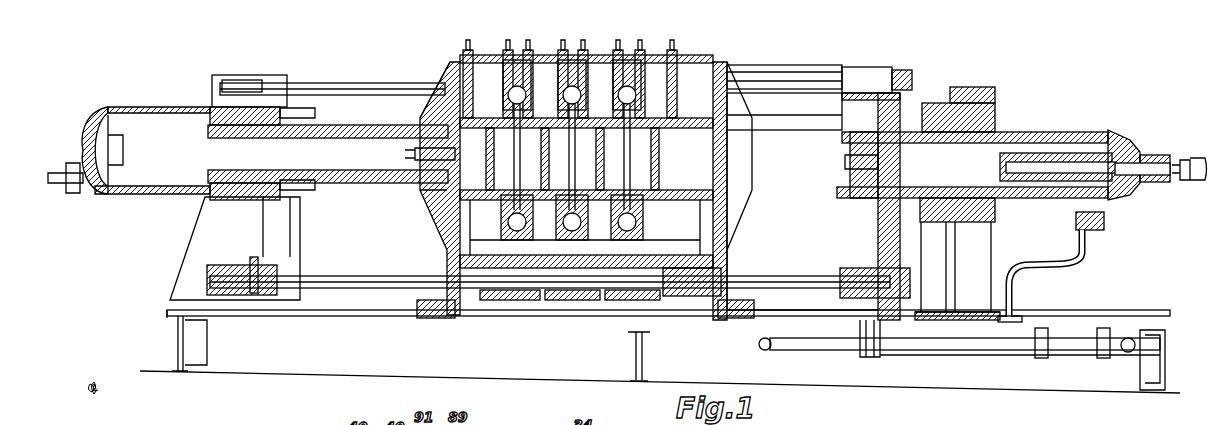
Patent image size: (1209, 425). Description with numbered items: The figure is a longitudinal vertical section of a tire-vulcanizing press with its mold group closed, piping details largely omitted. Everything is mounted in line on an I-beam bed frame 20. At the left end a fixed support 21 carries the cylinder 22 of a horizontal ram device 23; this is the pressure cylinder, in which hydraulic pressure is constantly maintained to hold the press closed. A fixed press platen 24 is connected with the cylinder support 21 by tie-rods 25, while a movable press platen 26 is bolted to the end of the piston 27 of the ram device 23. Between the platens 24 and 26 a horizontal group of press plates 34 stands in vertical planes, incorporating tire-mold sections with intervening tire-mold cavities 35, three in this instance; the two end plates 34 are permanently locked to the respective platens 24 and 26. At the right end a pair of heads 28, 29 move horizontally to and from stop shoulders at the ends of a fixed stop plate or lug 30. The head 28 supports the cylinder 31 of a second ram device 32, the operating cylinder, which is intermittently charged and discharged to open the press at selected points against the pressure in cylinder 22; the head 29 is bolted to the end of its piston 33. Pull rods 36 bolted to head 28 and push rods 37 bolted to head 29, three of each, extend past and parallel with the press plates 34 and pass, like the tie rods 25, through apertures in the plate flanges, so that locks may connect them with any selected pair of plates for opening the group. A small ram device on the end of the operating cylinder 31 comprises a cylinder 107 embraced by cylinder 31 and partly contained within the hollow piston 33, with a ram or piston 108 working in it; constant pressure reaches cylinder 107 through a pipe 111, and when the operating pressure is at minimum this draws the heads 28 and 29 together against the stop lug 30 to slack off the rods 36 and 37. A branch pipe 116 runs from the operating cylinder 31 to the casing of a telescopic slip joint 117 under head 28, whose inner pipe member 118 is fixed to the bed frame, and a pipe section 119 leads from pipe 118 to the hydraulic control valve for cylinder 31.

The I-beam bed frame 20 is at (378, 317).
The fixed support 21 is at (200, 231).
The cylinder 22 is at (122, 106).
The horizontal ram device 23 is at (243, 137).
The fixed press platen 24 is at (712, 240).
The tie-rods 25 is at (330, 92).
The movable press platen 26 is at (428, 220).
The piston 27 is at (345, 125).
The head 28 is at (980, 247).
The head 29 is at (852, 228).
The fixed stop plate or lug 30 is at (905, 322).
The cylinder 31 is at (1024, 122).
The ram device 32 is at (972, 149).
The piston 33 is at (1080, 135).
The press plates 34 is at (487, 55).
The tire-mold cavities 35 is at (520, 74).
The pull rods 36 is at (786, 124).
The push rods 37 is at (779, 72).
The cylinder 107 is at (1112, 150).
The ram or piston 108 is at (1140, 185).
The pipe 111 is at (1148, 146).
The branch pipe 116 is at (1088, 258).
The telescopic slip joint 117 is at (996, 342).
The pipe member 118 is at (1072, 345).
The pipe section or branch 119 is at (1133, 338).